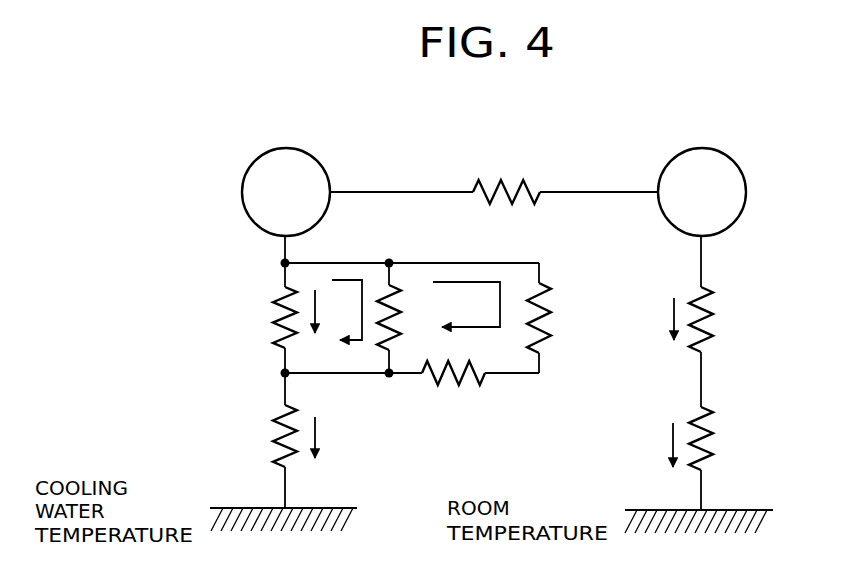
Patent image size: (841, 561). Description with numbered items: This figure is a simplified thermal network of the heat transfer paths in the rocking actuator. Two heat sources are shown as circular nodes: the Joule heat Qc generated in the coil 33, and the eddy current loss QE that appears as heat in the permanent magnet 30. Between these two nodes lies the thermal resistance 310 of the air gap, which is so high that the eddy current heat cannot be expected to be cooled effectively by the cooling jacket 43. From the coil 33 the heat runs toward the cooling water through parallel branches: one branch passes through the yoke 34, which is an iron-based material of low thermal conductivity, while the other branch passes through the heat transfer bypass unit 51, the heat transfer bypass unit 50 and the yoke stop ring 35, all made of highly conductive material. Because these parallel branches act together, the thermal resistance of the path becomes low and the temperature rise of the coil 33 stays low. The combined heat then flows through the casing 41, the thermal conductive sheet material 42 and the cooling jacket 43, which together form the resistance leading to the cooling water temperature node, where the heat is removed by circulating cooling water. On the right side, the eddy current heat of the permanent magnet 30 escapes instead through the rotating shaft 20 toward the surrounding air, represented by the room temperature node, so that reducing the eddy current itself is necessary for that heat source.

The coil 33 is at (248, 163).
The permanent magnet 30 is at (746, 192).
The thermal resistance 310 is at (503, 180).
The yoke 34 is at (272, 302).
The heat transfer bypass unit 51 is at (398, 335).
The heat transfer bypass unit 50 is at (553, 312).
The yoke stop ring 35 is at (458, 384).
The rotating shaft 20 is at (715, 318).
The casing 41 is at (185, 430).
The thermal conductive sheet material 42 is at (215, 430).
The cooling jacket 43 is at (272, 442).